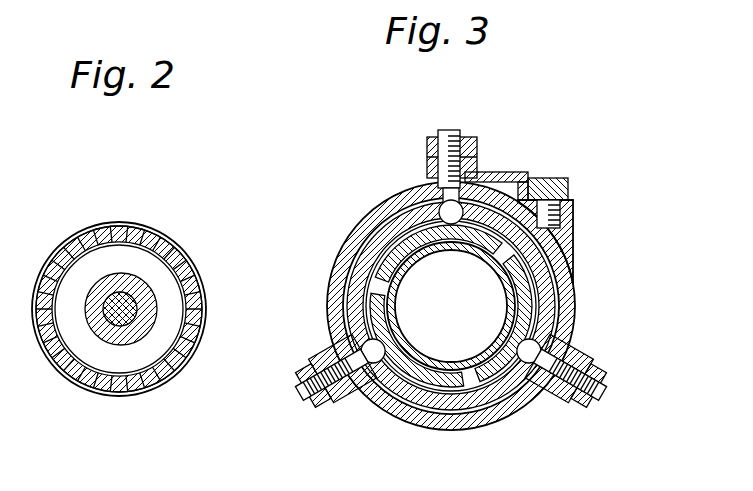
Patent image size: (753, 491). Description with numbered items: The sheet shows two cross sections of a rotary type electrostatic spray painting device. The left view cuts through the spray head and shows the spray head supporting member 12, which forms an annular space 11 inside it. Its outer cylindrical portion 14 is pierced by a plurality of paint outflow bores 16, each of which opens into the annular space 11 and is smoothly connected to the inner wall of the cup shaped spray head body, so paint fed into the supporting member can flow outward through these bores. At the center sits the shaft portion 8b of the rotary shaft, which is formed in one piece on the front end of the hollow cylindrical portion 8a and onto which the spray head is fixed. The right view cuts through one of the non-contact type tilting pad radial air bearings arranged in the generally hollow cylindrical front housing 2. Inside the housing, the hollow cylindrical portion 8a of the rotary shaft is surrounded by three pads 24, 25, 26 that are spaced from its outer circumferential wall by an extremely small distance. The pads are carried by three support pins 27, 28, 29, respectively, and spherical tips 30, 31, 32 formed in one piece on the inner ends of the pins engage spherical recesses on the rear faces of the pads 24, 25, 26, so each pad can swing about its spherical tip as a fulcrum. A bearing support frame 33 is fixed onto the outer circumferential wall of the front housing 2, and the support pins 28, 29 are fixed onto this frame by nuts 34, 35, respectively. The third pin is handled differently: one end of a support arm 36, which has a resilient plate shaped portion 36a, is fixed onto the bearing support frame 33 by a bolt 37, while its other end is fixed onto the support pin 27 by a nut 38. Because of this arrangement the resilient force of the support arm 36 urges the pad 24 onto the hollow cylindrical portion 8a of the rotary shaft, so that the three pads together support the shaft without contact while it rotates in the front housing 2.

In FIG. 3, the front housing 2 is at (377, 238).
In FIG. 3, the hollow cylindrical portion 8a is at (437, 357).
In FIG. 2, the shaft portion 8b is at (128, 290).
In FIG. 2, the annular space 11 is at (170, 302).
In FIG. 2, the spray head supporting member 12 is at (140, 327).
In FIG. 2, the outer cylindrical portion 14 is at (195, 262).
In FIG. 2, the paint outflow bores 16 is at (73, 235).
In FIG. 3, the pad 24 is at (340, 262).
In FIG. 3, the pad 25 is at (573, 255).
In FIG. 3, the pad 26 is at (440, 410).
In FIG. 3, the support pin 27 is at (455, 130).
In FIG. 3, the support pin 28 is at (605, 366).
In FIG. 3, the support pin 29 is at (360, 388).
In FIG. 3, the spherical tip 30 is at (438, 205).
In FIG. 3, the spherical tip 31 is at (556, 332).
In FIG. 3, the spherical tip 32 is at (340, 345).
In FIG. 3, the bearing support frame 33 is at (390, 203).
In FIG. 3, the nut 34 is at (566, 398).
In FIG. 3, the nut 35 is at (317, 398).
In FIG. 3, the support arm 36 is at (530, 178).
In FIG. 3, the resilient plate shaped portion 36a is at (507, 172).
In FIG. 3, the bolt 37 is at (557, 186).
In FIG. 3, the nut 38 is at (477, 144).